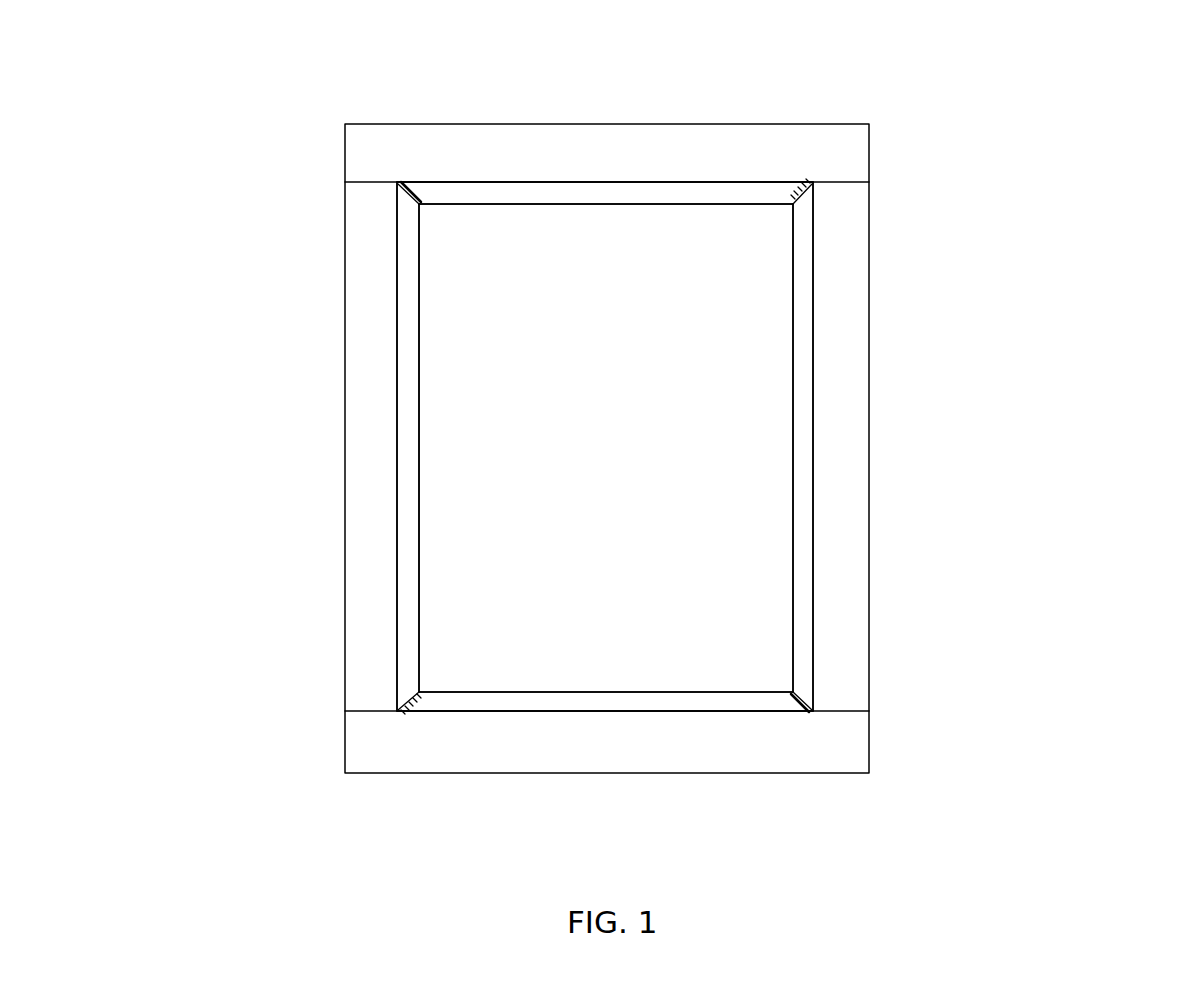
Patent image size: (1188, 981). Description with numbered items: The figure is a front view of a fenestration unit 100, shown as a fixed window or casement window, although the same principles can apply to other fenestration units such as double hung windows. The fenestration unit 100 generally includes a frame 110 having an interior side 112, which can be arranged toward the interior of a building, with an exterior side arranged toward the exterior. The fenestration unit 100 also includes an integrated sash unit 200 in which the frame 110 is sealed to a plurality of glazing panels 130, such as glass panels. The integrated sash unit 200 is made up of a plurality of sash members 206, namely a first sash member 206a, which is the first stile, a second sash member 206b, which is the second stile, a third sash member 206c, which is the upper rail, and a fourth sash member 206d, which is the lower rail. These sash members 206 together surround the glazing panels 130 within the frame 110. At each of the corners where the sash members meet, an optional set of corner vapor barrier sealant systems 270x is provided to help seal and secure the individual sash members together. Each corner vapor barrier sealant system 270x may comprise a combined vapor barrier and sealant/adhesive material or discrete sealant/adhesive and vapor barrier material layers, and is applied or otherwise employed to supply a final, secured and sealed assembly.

The fenestration unit 100 is at (233, 78).
The frame 110 is at (700, 124).
The interior side 112 is at (372, 748).
The glazing panels 130 is at (455, 557).
The integrated sash unit 200 is at (805, 420).
The sash members 206 is at (803, 590).
The first sash member 206a is at (803, 673).
The second sash member 206b is at (405, 610).
The third sash member 206c is at (665, 197).
The fourth sash member 206d is at (617, 703).
The corner vapor barrier sealant systems 270x is at (800, 200).